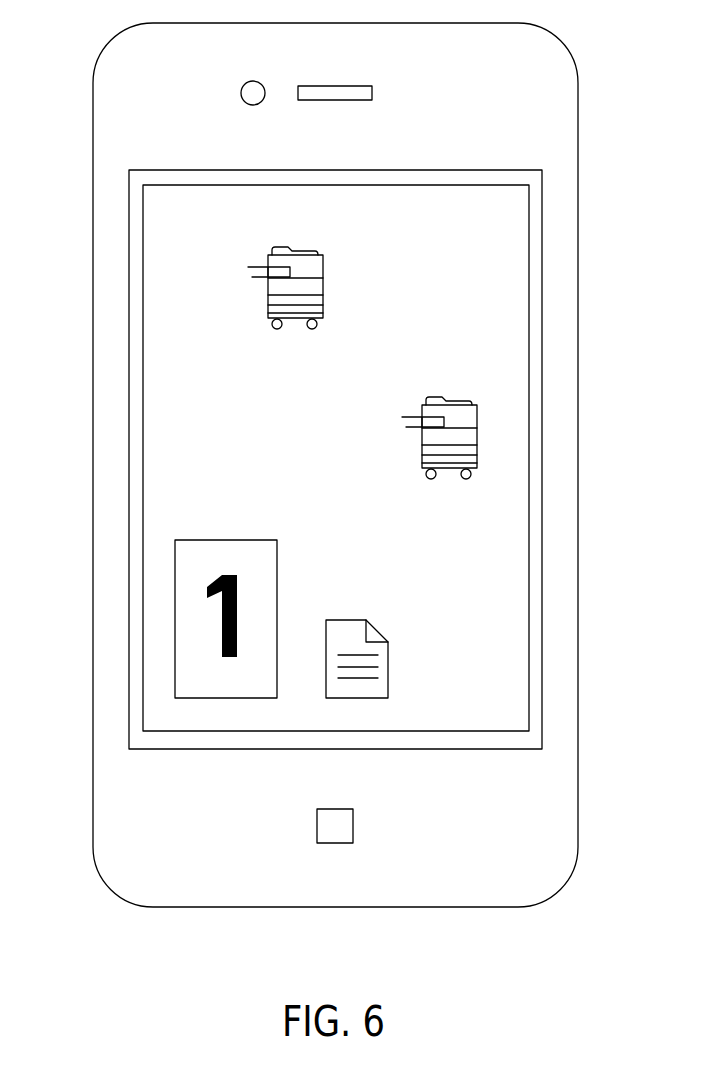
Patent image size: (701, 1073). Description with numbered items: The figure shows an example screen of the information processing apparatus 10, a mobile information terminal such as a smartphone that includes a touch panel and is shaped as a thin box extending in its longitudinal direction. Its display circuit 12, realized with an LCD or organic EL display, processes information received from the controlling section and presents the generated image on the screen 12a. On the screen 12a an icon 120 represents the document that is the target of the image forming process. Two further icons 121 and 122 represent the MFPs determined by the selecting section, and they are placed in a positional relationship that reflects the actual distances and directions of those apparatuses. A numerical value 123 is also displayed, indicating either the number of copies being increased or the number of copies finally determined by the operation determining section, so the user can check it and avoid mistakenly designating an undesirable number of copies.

The information processing apparatus 10 is at (578, 150).
The display circuit 12 is at (465, 170).
The screen 12a is at (378, 185).
The icon 120 is at (341, 698).
The icon 121 is at (268, 290).
The icon 122 is at (477, 428).
The numerical value 123 is at (203, 698).